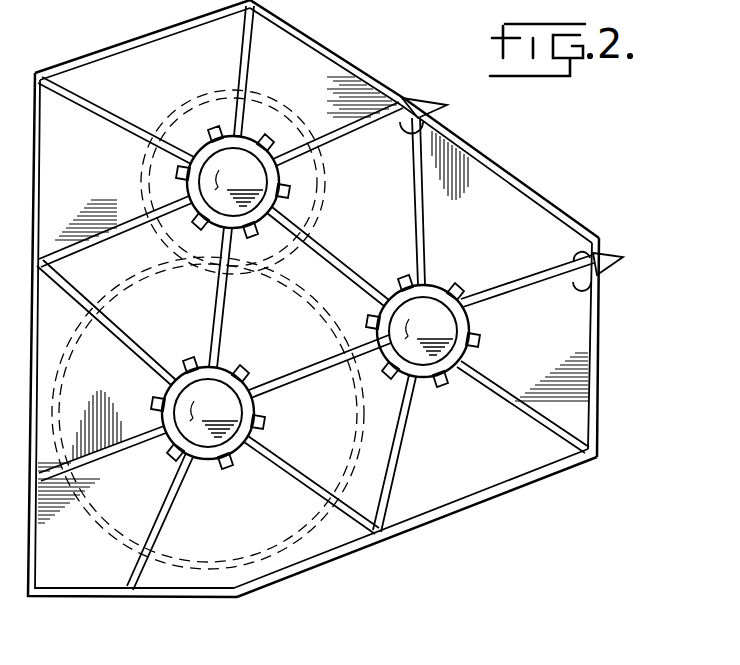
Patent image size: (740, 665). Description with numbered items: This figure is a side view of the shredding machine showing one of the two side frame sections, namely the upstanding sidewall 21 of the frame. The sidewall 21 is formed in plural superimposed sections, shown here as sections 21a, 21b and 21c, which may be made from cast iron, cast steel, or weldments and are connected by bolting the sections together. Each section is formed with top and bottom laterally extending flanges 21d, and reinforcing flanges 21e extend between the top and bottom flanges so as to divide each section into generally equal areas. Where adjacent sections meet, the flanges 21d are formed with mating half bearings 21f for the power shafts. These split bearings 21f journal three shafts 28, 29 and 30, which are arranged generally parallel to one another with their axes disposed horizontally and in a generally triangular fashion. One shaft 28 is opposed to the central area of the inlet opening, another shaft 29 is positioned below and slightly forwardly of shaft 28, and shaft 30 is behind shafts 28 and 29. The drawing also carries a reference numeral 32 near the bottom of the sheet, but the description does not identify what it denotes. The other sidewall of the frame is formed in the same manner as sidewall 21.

The sidewall 21 is at (102, 603).
The sidewall section 21a is at (351, 62).
The sidewall section 21b is at (531, 190).
The sidewall section 21c is at (483, 481).
The laterally extending flange 21d is at (130, 38).
The reinforcing flange 21e is at (243, 73).
The half bearing 21f is at (248, 136).
The shaft 28 is at (226, 208).
The shaft 29 is at (218, 395).
The shaft 30 is at (428, 306).
The shaft 32 is at (322, 655).